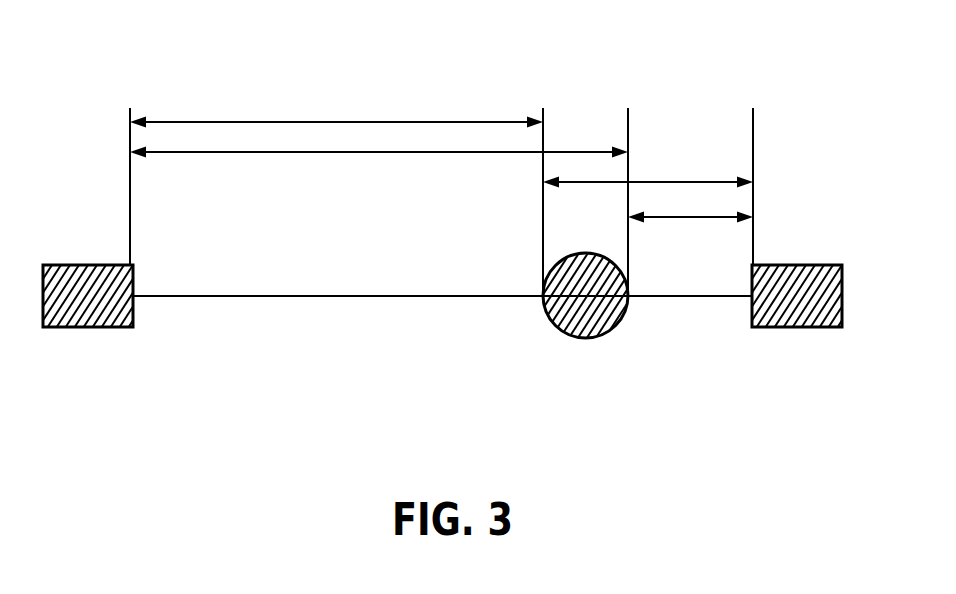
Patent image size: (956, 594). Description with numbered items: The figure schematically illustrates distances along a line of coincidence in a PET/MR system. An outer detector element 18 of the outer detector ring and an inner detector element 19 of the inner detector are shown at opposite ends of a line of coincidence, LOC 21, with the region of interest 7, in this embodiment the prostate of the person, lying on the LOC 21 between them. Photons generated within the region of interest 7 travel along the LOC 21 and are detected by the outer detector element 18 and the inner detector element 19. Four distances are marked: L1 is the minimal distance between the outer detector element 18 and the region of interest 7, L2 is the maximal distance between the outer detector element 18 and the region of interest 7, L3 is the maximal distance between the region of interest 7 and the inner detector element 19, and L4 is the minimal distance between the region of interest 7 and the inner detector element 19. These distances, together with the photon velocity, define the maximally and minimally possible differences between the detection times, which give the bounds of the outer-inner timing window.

The region of interest 7 is at (577, 338).
The outer detector element 18 is at (110, 327).
The inner detector element 19 is at (820, 327).
The line of coincidence 21 is at (345, 297).
The minimal distance between outer detector element and region of interest L1 is at (433, 122).
The maximal distance between outer detector element and region of interest L2 is at (495, 155).
The maximal distance between region of interest and inner detector element L3 is at (673, 180).
The minimal distance between region of interest and inner detector element L4 is at (707, 218).